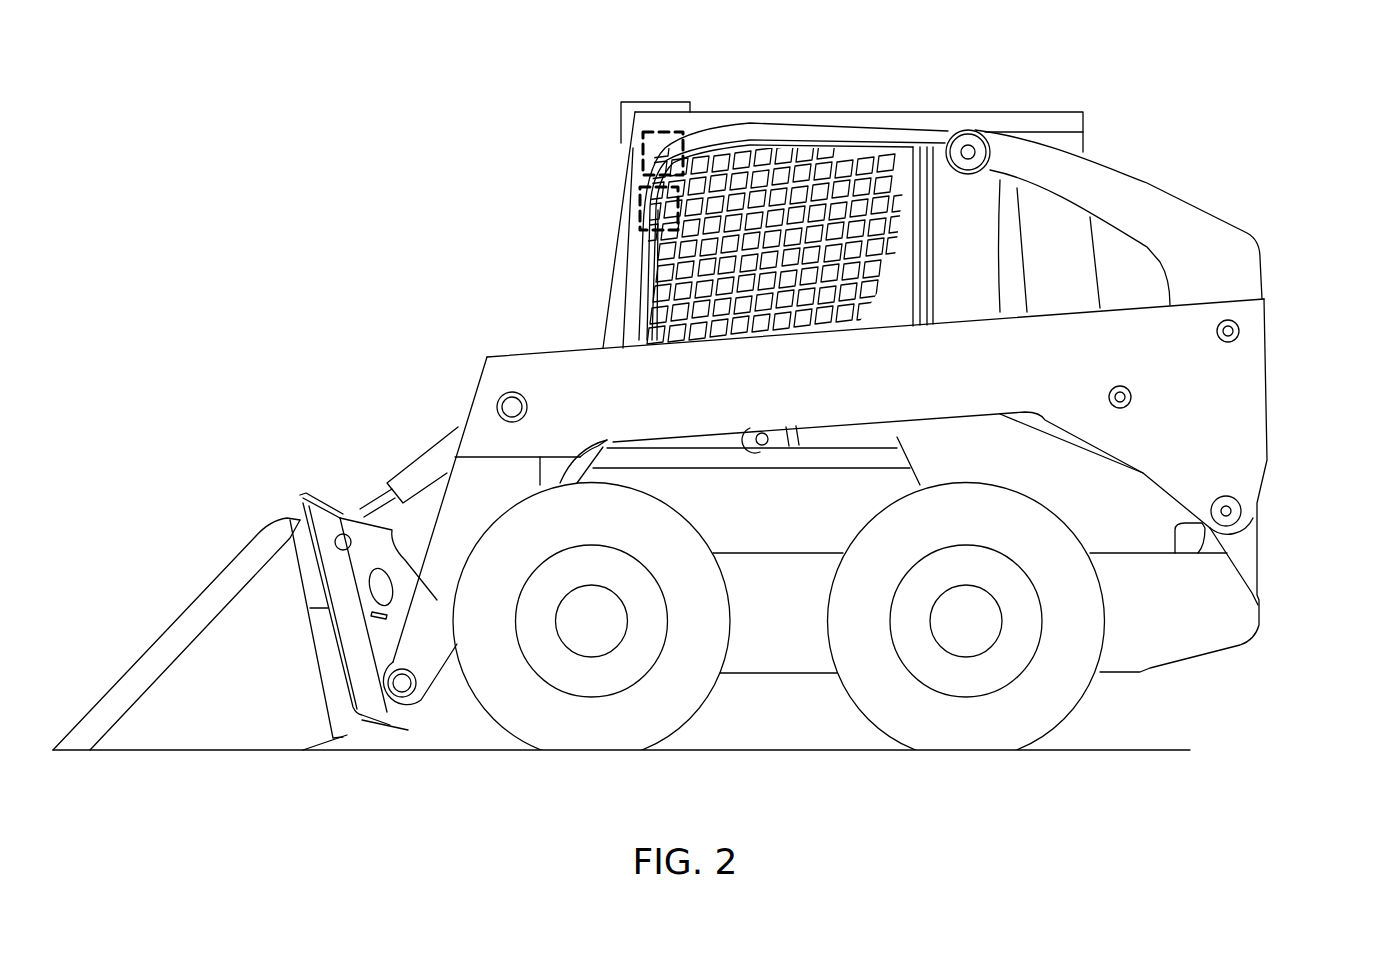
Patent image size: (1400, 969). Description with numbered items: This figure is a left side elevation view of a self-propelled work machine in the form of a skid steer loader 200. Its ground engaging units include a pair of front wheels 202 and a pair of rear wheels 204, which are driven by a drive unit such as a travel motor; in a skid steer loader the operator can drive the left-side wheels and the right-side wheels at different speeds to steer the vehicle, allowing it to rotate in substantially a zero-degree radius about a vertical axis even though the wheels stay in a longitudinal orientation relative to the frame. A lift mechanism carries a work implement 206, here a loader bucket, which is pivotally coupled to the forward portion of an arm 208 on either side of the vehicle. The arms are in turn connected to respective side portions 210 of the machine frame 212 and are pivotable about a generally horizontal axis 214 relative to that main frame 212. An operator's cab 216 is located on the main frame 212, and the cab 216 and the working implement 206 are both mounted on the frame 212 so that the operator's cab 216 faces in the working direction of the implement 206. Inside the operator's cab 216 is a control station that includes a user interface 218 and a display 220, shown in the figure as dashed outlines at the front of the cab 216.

The skid steer loader 200 is at (362, 100).
The front wheels 202 is at (645, 698).
The rear wheels 204 is at (1020, 705).
The work implement 206 is at (188, 630).
The arm 208 is at (500, 372).
The side portion 210 is at (1232, 393).
The machine frame 212 is at (773, 493).
The horizontal axis 214 is at (1238, 325).
The operator's cab 216 is at (965, 112).
The user interface 218 is at (623, 153).
The display 220 is at (623, 200).